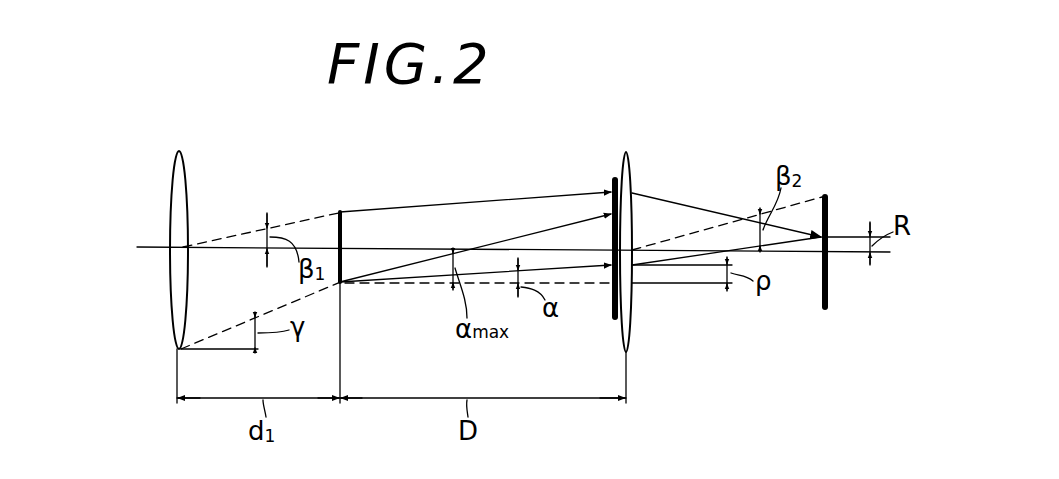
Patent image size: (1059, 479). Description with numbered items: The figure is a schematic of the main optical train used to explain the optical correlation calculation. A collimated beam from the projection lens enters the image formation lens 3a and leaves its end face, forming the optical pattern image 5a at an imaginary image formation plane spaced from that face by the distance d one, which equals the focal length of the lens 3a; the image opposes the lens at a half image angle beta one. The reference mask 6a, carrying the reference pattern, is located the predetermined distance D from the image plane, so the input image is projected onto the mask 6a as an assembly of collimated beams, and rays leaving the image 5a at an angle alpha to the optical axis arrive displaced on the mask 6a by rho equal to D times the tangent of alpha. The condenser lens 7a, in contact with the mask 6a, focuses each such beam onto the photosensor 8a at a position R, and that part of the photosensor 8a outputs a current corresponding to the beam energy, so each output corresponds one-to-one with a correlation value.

The image formation lens 3a is at (182, 178).
The optical pattern image 5a is at (343, 237).
The reference mask 6a is at (612, 188).
The condenser lens 7a is at (630, 186).
The photosensor 8a is at (827, 212).